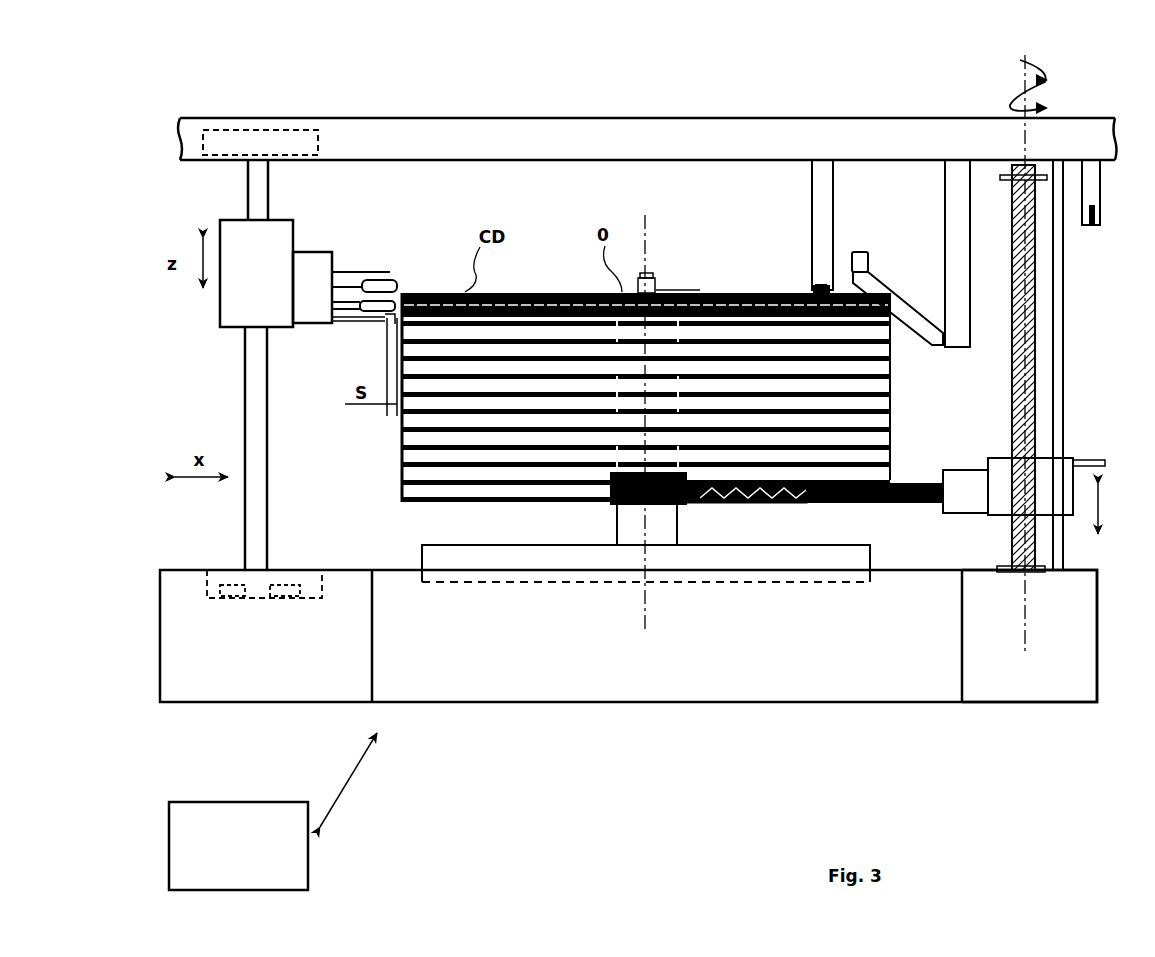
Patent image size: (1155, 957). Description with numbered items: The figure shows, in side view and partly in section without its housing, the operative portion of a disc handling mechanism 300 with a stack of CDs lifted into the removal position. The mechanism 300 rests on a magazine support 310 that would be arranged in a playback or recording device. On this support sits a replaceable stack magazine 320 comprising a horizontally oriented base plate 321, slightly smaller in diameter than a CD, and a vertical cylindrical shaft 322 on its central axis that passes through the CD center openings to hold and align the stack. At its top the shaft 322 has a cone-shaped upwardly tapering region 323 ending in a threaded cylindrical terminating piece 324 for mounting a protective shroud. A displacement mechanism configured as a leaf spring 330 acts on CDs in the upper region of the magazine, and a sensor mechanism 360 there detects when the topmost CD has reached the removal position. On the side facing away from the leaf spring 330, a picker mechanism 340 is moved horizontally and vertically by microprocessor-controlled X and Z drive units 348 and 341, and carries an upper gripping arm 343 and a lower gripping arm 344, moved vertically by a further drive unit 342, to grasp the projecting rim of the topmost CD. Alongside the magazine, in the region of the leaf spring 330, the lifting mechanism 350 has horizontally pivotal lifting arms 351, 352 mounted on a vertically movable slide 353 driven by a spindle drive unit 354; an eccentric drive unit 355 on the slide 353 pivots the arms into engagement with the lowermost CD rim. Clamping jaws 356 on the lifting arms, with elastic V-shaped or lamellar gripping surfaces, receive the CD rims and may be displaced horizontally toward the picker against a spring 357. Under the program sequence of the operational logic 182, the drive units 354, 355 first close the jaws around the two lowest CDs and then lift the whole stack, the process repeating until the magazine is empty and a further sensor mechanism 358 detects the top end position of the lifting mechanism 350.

The disc handling mechanism 300 is at (548, 755).
The magazine support 310 is at (778, 638).
The stack magazine 320 is at (390, 450).
The base plate 321 is at (477, 558).
The shaft 322 is at (635, 528).
The upwardly tapering region 323 is at (665, 293).
The cylindrical terminating piece 324 is at (650, 292).
The leaf spring 330 is at (893, 280).
The picker mechanism 340 is at (218, 318).
The Z drive unit 341 is at (285, 243).
The drive unit 342 is at (325, 258).
The upper gripping arm 343 is at (368, 283).
The lower gripping arm 344 is at (357, 314).
The X drive unit 348 is at (230, 572).
The lifting mechanism 350 is at (1068, 380).
The lifting arm 351 is at (861, 367).
The lifting arm 352 is at (932, 503).
The slide 353 is at (1072, 458).
The spindle drive unit 354 is at (1004, 684).
The eccentric drive unit 355 is at (978, 492).
The clamping jaws 356 is at (693, 505).
The spring 357 is at (752, 505).
The further sensor mechanism 358 is at (1100, 228).
The sensor mechanism 360 is at (822, 178).
The operational logic 182 is at (238, 846).